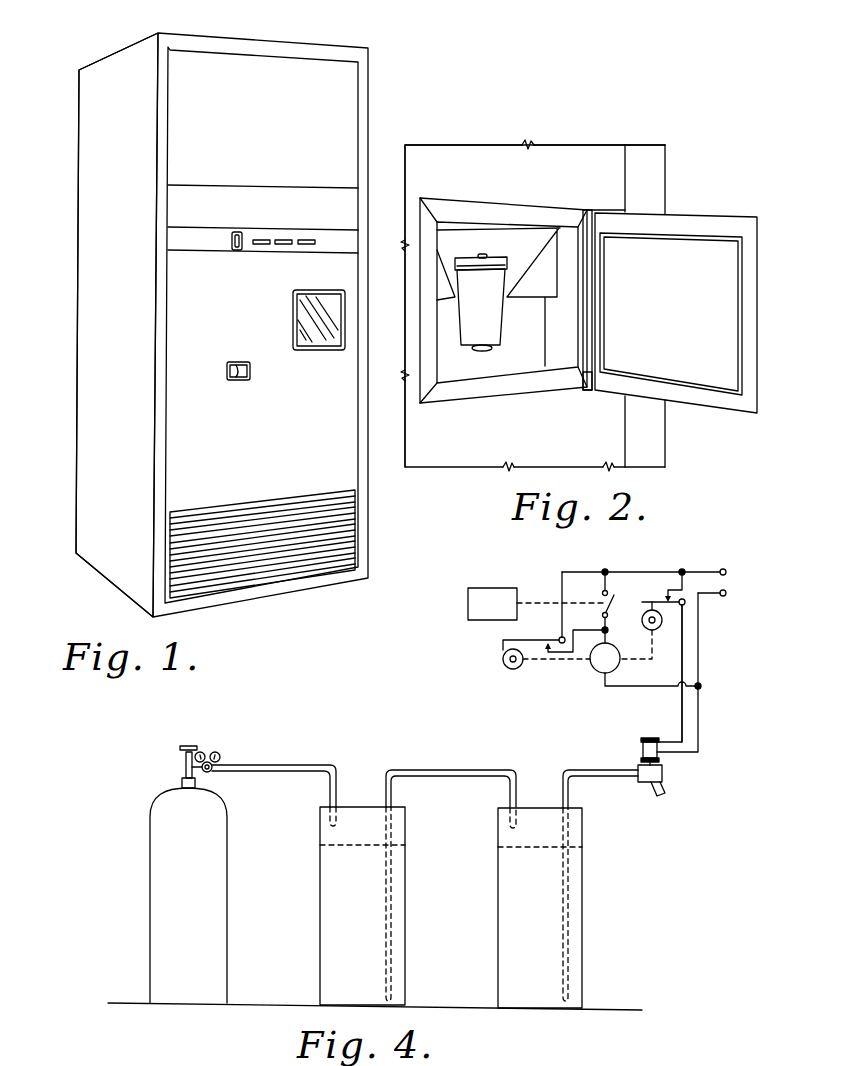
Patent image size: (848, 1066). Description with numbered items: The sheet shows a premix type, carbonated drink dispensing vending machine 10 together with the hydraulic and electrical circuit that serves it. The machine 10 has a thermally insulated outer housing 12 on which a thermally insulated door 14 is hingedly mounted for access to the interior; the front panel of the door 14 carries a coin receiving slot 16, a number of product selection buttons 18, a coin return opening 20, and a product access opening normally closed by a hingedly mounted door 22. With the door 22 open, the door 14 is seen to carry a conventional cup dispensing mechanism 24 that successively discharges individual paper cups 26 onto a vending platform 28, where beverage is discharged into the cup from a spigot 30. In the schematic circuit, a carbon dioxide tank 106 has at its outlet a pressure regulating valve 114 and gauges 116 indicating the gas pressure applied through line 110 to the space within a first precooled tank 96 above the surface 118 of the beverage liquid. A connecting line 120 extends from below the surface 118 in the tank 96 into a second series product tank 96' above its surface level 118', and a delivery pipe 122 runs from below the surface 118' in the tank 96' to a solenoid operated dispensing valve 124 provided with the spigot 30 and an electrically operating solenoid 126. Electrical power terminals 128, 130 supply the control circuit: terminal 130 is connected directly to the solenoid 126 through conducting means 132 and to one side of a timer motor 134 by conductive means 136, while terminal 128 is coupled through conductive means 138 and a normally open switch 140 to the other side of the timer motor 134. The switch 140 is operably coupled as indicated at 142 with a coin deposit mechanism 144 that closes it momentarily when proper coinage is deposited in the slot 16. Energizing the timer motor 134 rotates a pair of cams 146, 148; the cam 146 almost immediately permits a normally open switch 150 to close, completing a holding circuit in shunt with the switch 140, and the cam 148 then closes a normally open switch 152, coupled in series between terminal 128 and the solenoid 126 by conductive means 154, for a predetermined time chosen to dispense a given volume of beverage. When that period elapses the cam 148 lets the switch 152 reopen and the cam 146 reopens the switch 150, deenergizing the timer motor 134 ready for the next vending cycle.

In FIG. 1, the vending machine 10 is at (372, 79).
In FIG. 2, the vending machine 10 is at (671, 173).
In FIG. 1, the outer housing 12 is at (90, 93).
In FIG. 1, the door 14 is at (345, 113).
In FIG. 2, the door 14 is at (600, 155).
In FIG. 1, the coin receiving slot 16 is at (240, 234).
In FIG. 1, the product selection buttons 18 is at (286, 237).
In FIG. 1, the coin return opening 20 is at (241, 380).
In FIG. 1, the product access door 22 is at (302, 310).
In FIG. 2, the product access door 22 is at (717, 248).
In FIG. 2, the cup dispensing mechanism 24 is at (525, 237).
In FIG. 2, the paper cup 26 is at (492, 322).
In FIG. 2, the vending platform 28 is at (493, 348).
In FIG. 2, the spigot 30 is at (483, 255).
In FIG. 4, the spigot 30 is at (665, 796).
In FIG. 4, the first precooled tank 96 is at (346, 906).
In FIG. 4, the second series product tank 96' is at (523, 908).
In FIG. 4, the carbon dioxide tank 106 is at (163, 874).
In FIG. 4, the gas line 110 is at (292, 767).
In FIG. 4, the pressure regulating valve 114 is at (210, 773).
In FIG. 4, the gauges 116 is at (222, 757).
In FIG. 4, the liquid surface 118 is at (346, 836).
In FIG. 4, the liquid surface level 118' is at (521, 836).
In FIG. 4, the connecting line 120 is at (442, 769).
In FIG. 4, the delivery pipe 122 is at (592, 769).
In FIG. 4, the dispensing valve 124 is at (663, 772).
In FIG. 4, the solenoid 126 is at (643, 742).
In FIG. 4, the power terminal 128 is at (727, 572).
In FIG. 4, the power terminal 130 is at (727, 593).
In FIG. 4, the conducting means 132 is at (700, 716).
In FIG. 4, the timer motor 134 is at (592, 668).
In FIG. 4, the conductive means 136 is at (636, 688).
In FIG. 4, the conductive means 138 is at (658, 570).
In FIG. 4, the switch 140 is at (608, 602).
In FIG. 4, the operable coupling 142 is at (536, 605).
In FIG. 4, the coin deposit mechanism 144 is at (492, 595).
In FIG. 4, the cam 146 is at (511, 669).
In FIG. 4, the cam 148 is at (650, 626).
In FIG. 4, the switch 150 is at (538, 640).
In FIG. 4, the switch 152 is at (664, 598).
In FIG. 4, the conductive means 154 is at (682, 703).